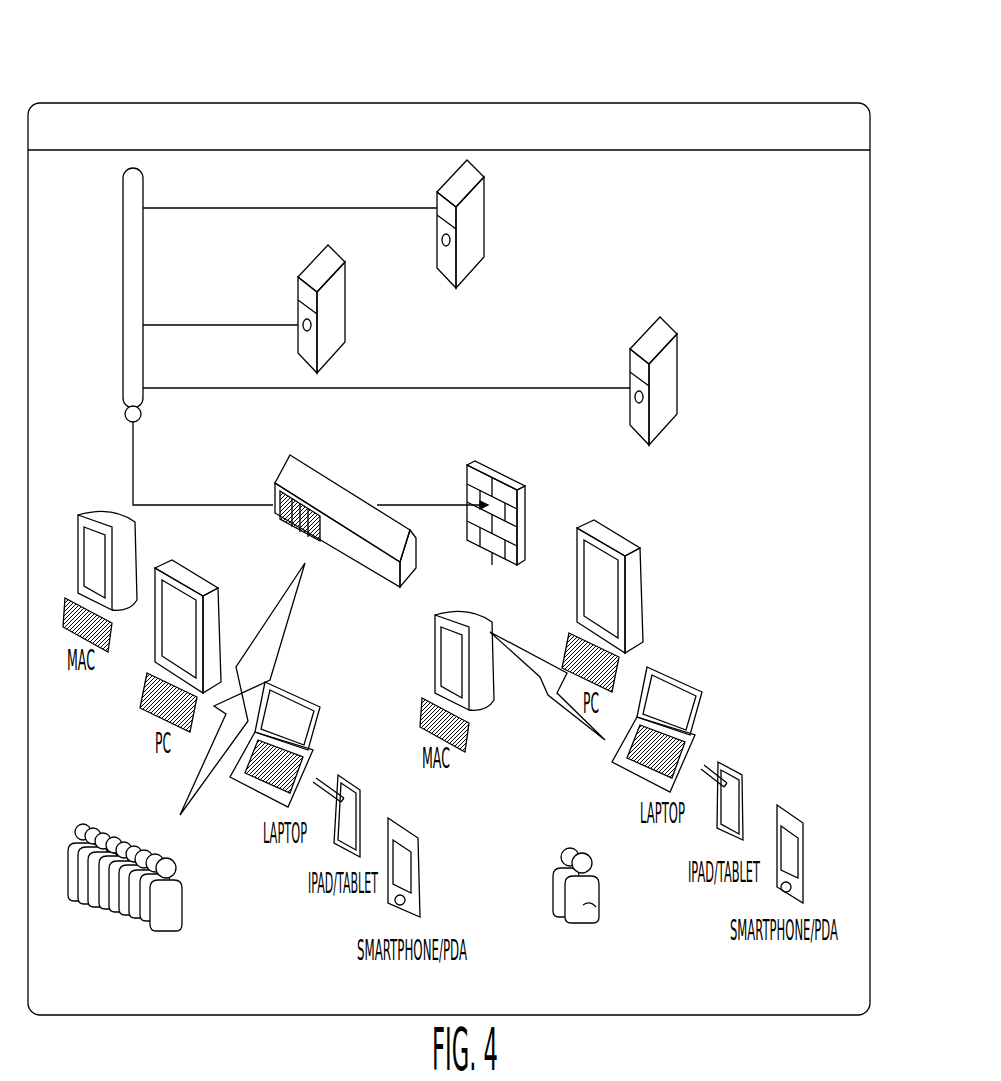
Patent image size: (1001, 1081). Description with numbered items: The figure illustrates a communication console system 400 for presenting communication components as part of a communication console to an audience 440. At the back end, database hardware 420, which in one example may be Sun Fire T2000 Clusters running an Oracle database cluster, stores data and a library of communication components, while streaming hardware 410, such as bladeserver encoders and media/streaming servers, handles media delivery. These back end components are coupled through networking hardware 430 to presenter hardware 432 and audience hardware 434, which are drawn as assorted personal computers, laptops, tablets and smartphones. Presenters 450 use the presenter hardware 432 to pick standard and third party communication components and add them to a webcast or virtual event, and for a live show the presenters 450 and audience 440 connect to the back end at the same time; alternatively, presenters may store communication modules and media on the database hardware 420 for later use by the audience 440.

The communication console system 400 is at (877, 104).
The streaming hardware 410 is at (667, 326).
The database hardware 420 is at (435, 245).
The networking hardware 430 is at (318, 490).
The presenter hardware 432 is at (540, 680).
The audience hardware 434 is at (288, 613).
The audience 440 is at (127, 923).
The presenters 450 is at (592, 912).